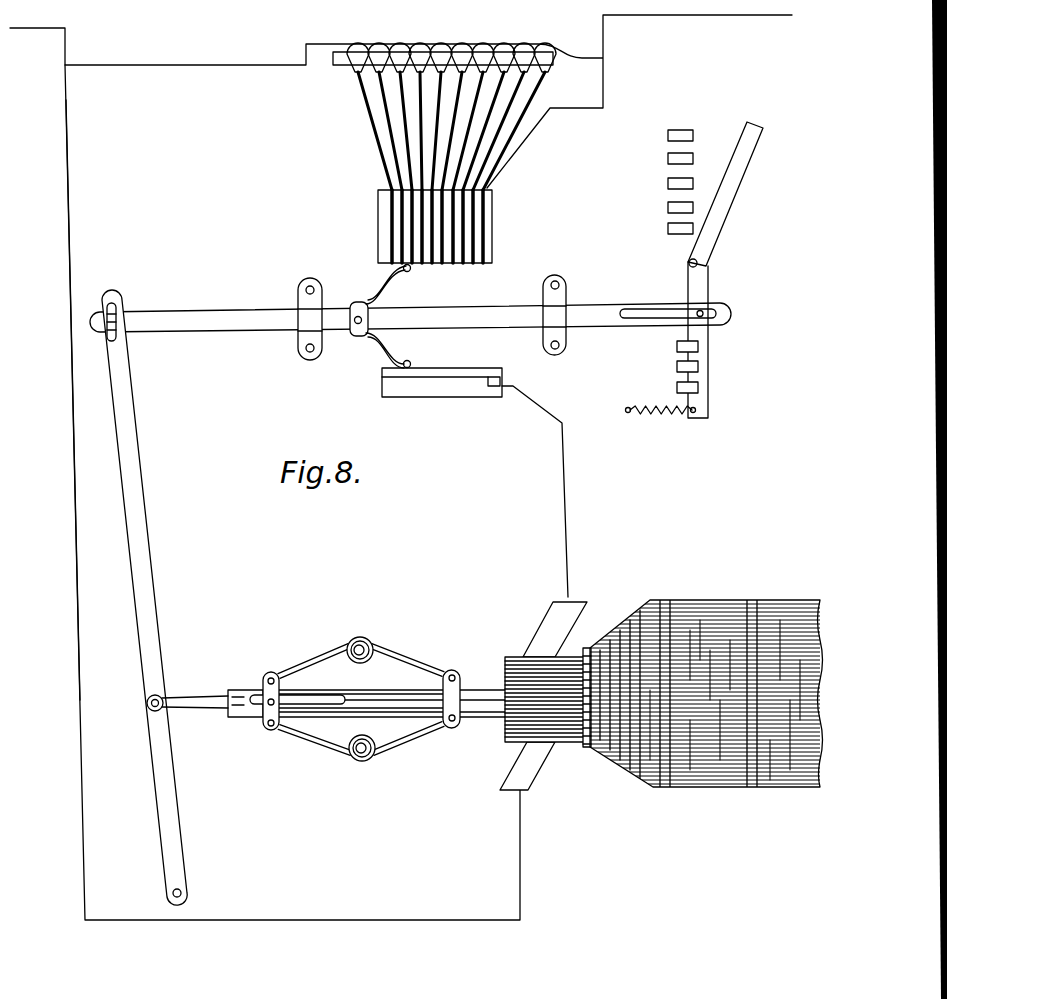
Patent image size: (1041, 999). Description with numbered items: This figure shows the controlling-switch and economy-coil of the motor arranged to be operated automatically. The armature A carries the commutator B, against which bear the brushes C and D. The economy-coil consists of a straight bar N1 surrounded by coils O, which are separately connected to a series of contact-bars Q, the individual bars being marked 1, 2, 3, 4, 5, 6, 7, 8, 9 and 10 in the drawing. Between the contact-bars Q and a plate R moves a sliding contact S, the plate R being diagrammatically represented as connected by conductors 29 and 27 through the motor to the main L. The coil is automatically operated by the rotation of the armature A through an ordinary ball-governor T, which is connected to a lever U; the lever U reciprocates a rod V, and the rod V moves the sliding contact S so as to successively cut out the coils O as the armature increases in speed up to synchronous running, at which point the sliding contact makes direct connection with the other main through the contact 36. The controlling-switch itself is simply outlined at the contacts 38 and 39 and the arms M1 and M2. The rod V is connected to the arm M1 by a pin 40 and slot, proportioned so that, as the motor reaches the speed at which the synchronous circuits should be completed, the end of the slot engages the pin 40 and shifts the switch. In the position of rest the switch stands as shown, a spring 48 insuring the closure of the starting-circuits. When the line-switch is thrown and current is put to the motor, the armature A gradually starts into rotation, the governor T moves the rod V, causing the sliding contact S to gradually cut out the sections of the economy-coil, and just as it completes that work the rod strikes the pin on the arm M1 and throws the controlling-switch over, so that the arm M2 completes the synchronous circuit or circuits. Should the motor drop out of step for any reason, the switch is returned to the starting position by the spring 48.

The main L is at (401, 460).
The conductor 27 is at (61, 400).
The coils O is at (456, 52).
The straight bar N1 is at (468, 126).
The contact-bars Q is at (428, 242).
The contact 36 is at (492, 235).
The contact strip 10 is at (386, 226).
The contact strip 9 is at (404, 226).
The contact strip 8 is at (414, 226).
The contact strip 7 is at (422, 263).
The contact strip 6 is at (432, 263).
The contact strip 5 is at (442, 263).
The contact strip 4 is at (453, 263).
The contact strip 3 is at (463, 263).
The contact strip 2 is at (473, 263).
The contact strip 1 is at (483, 263).
The rod V is at (410, 317).
The sliding contact S is at (362, 281).
The plate R is at (442, 391).
The conductor 29 is at (563, 478).
The switch arm M2 is at (734, 194).
The switch arm M1 is at (719, 340).
The pivot 40 is at (689, 264).
The switch contacts 38 is at (662, 182).
The switch contacts 39 is at (677, 367).
The spring 48 is at (663, 418).
The lever U is at (140, 534).
The ball-governor T is at (333, 698).
The brush D is at (540, 626).
The brush C is at (538, 768).
The commutator B is at (548, 697).
The armature A is at (701, 600).